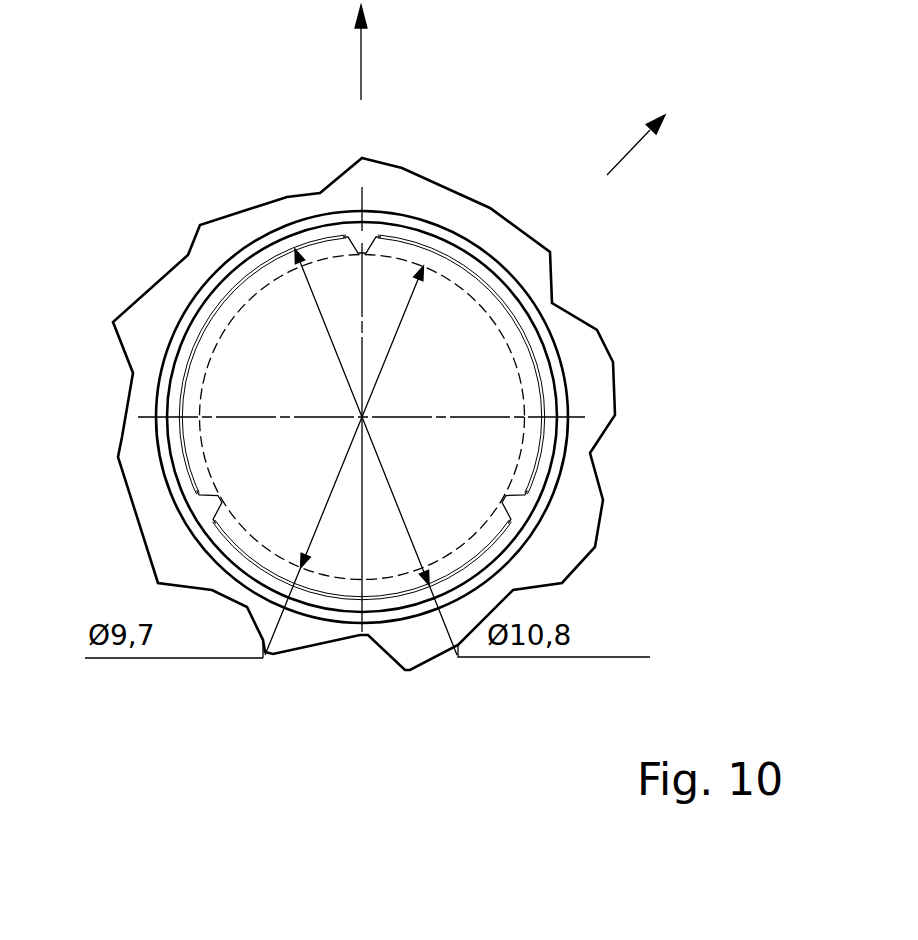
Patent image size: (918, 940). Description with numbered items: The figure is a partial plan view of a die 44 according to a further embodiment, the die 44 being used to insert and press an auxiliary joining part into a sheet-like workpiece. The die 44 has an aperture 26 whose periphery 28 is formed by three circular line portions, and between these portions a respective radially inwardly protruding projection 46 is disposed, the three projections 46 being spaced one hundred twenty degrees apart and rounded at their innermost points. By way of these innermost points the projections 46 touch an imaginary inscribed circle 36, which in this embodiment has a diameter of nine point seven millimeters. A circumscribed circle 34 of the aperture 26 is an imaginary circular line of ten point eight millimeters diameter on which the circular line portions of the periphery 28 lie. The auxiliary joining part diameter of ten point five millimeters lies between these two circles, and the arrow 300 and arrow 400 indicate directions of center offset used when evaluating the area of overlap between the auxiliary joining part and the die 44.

The aperture 26 is at (386, 553).
The periphery 28 is at (533, 364).
The circumscribed circle 34 is at (517, 513).
The inscribed circle 36 is at (456, 291).
The die 44 is at (592, 453).
The projection 46 is at (363, 250).
The arrow 300 is at (362, 50).
The arrow 400 is at (630, 155).